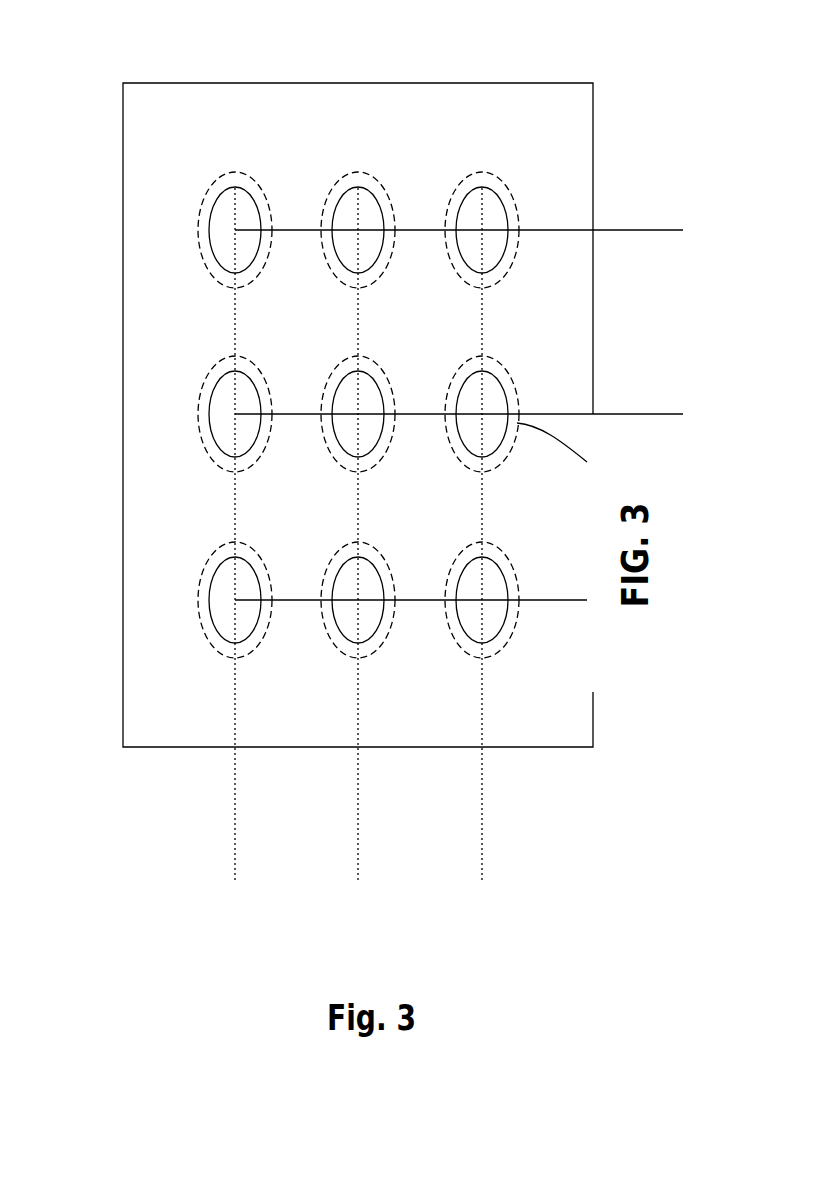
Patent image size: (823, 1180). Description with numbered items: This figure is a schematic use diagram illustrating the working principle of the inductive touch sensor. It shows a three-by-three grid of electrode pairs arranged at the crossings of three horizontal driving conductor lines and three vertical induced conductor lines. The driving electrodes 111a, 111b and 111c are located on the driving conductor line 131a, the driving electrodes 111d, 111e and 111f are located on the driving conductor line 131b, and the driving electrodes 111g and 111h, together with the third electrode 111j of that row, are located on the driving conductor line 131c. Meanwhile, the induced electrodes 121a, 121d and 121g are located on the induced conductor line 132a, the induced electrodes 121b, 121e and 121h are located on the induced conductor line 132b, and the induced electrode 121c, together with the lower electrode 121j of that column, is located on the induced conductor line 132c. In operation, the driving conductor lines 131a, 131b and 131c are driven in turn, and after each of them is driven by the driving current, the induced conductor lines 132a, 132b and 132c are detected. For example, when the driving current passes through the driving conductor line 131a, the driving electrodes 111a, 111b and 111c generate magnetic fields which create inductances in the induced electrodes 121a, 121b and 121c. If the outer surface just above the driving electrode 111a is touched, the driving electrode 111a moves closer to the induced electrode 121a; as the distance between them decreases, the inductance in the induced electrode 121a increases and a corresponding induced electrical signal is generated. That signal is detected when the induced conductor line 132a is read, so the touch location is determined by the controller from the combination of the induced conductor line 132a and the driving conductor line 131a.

The driving electrode 111a is at (235, 195).
The driving electrode 111b is at (358, 195).
The driving electrode 111c is at (482, 195).
The driving electrode 111d is at (220, 403).
The driving electrode 111e is at (343, 430).
The driving electrode 111f is at (497, 408).
The driving electrode 111g is at (220, 593).
The driving electrode 111h is at (367, 627).
The first electrode 111j is at (490, 627).
The induced electrode 121a is at (228, 172).
The induced electrode 121b is at (353, 172).
The induced electrode 121c is at (477, 172).
The induced electrode 121d is at (200, 418).
The induced electrode 121e is at (328, 385).
The induced electrode 121g is at (200, 607).
The induced electrode 121h is at (347, 648).
The second electrode 121j is at (472, 647).
The driving conductor line 131a is at (474, 206).
The driving conductor line 131b is at (475, 390).
The driving conductor line 131c is at (474, 577).
The induced conductor line 132a is at (239, 561).
The induced conductor line 132b is at (362, 561).
The induced conductor line 132c is at (485, 561).